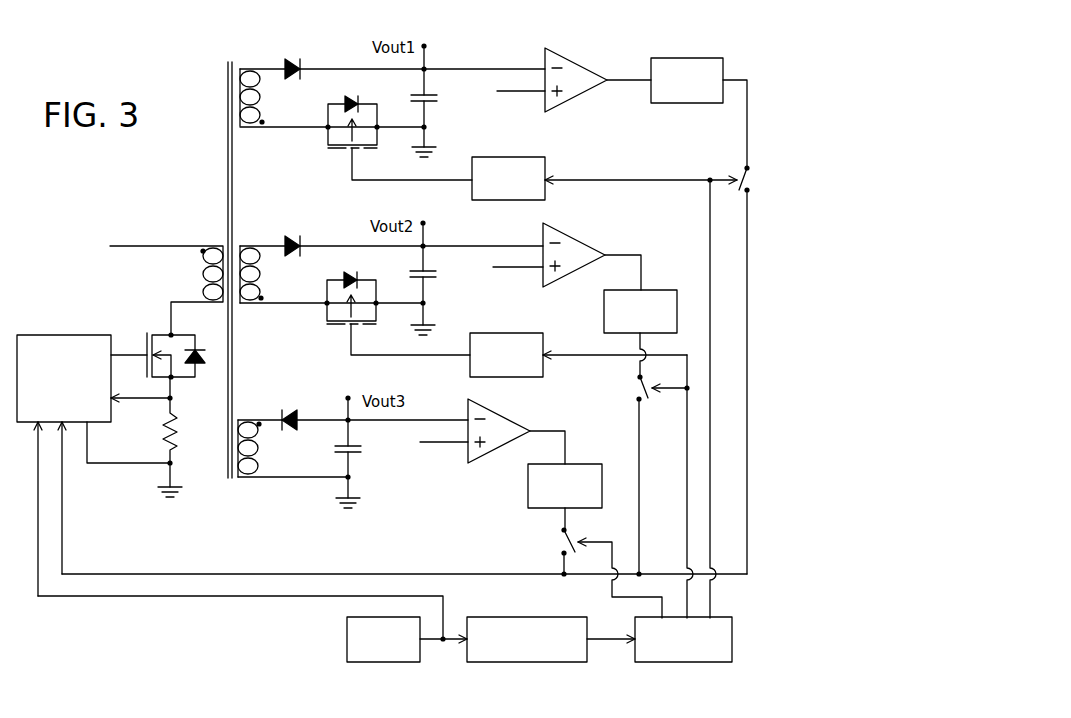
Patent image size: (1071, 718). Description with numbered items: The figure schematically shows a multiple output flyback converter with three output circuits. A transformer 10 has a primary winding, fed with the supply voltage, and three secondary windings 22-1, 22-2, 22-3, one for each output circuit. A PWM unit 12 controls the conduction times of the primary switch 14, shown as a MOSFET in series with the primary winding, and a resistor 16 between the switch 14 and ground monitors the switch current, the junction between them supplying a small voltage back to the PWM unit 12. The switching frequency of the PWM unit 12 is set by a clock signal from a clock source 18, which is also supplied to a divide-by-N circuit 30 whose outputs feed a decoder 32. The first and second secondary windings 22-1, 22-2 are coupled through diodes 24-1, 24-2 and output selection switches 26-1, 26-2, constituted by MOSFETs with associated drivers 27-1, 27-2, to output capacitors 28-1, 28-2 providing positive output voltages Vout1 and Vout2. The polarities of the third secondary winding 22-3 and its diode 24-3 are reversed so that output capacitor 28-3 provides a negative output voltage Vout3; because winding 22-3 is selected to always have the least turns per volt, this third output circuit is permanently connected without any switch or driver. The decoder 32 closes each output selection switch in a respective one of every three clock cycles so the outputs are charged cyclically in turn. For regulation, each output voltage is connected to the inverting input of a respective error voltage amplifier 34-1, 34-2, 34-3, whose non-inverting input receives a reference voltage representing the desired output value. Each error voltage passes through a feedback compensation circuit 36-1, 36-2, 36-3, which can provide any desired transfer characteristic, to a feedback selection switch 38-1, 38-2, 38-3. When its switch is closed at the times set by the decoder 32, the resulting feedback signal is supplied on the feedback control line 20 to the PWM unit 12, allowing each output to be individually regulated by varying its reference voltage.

The transformer 10 is at (222, 240).
The PWM unit 12 is at (64, 338).
The primary switch 14 is at (146, 338).
The resistor 16 is at (176, 440).
The clock source 18 is at (350, 626).
The feedback control line 20 is at (170, 573).
The secondary winding 22-1 is at (262, 92).
The secondary winding 22-2 is at (260, 270).
The secondary winding 22-3 is at (258, 445).
The diode 24-1 is at (288, 61).
The diode 24-2 is at (288, 238).
The diode 24-3 is at (284, 416).
The output selection switch 26-1 is at (337, 152).
The output selection switch 26-2 is at (335, 328).
The driver 27-1 is at (512, 163).
The driver 27-2 is at (512, 340).
The output capacitor 28-1 is at (435, 104).
The output capacitor 28-2 is at (434, 281).
The output capacitor 28-3 is at (363, 453).
The divide-by-N circuit 30 is at (540, 618).
The 1-of-N decoder 32 is at (717, 621).
The error voltage amplifier 34-1 is at (545, 57).
The error voltage amplifier 34-2 is at (543, 235).
The error voltage amplifier 34-3 is at (500, 425).
The feedback compensation circuit 36-1 is at (651, 72).
The feedback compensation circuit 36-2 is at (648, 291).
The feedback compensation circuit 36-3 is at (528, 497).
The feedback selection switch 38-1 is at (740, 171).
The feedback selection switch 38-2 is at (636, 388).
The feedback selection switch 38-3 is at (558, 542).